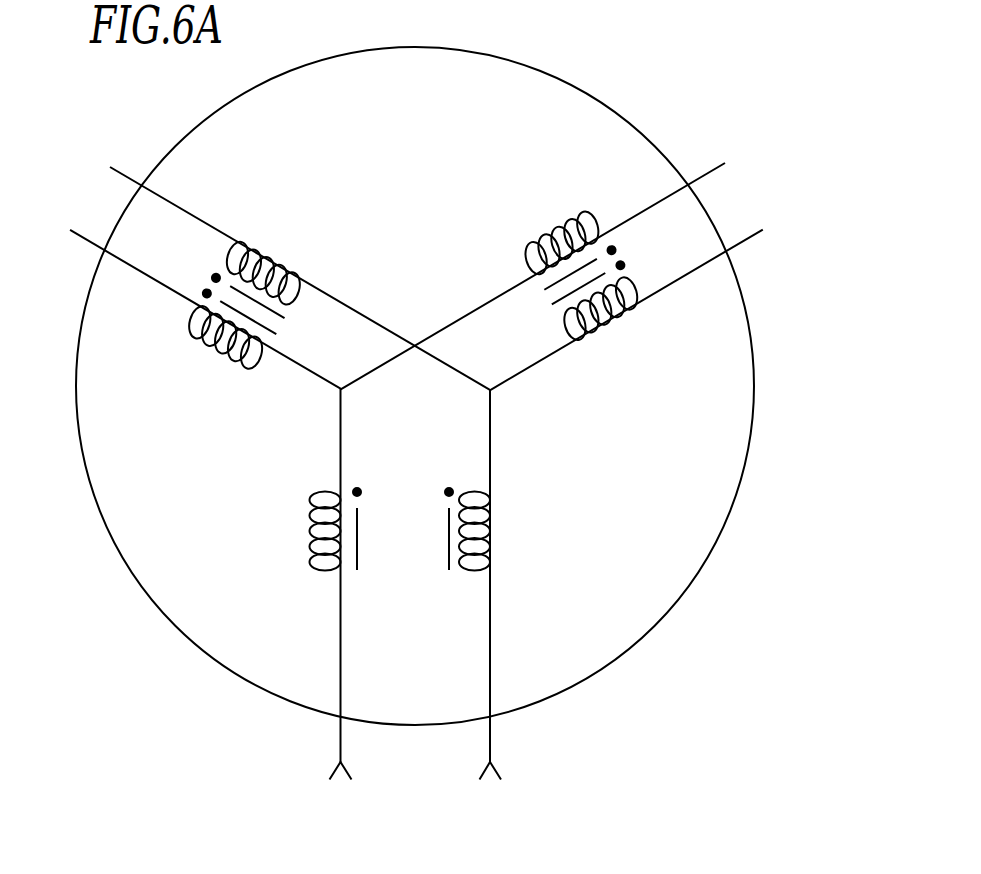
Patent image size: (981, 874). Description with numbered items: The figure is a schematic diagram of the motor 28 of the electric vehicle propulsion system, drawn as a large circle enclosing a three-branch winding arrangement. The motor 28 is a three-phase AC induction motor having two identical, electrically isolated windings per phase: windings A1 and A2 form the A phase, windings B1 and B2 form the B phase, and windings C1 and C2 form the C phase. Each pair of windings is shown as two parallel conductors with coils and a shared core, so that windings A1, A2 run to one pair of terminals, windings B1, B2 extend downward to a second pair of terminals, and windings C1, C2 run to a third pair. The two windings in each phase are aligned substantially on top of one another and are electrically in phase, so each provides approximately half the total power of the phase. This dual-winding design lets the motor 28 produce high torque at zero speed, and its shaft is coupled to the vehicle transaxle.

The motor 28 is at (737, 500).
The winding A1 is at (70, 231).
The winding A2 is at (109, 166).
The winding B1 is at (331, 601).
The winding B2 is at (480, 601).
The winding C1 is at (725, 165).
The winding C2 is at (763, 232).